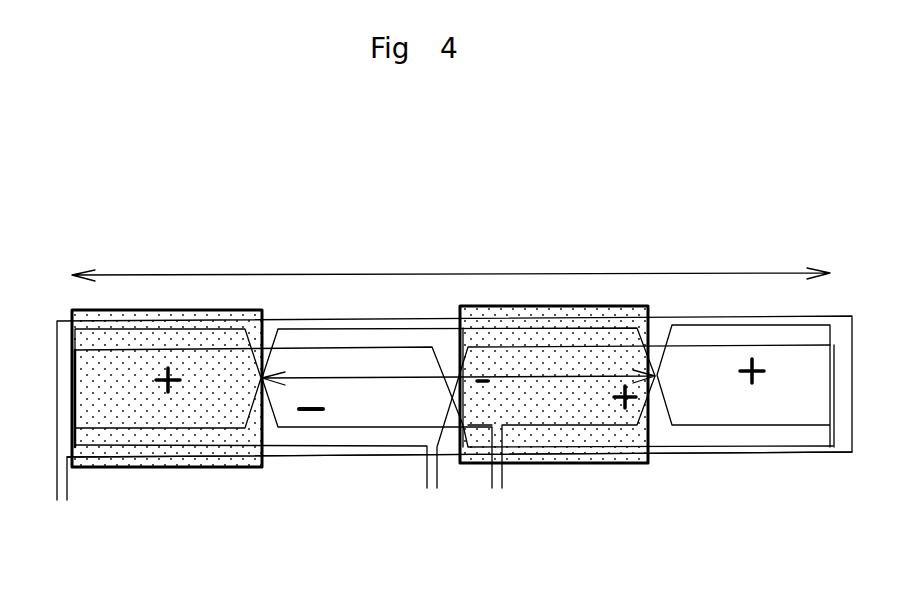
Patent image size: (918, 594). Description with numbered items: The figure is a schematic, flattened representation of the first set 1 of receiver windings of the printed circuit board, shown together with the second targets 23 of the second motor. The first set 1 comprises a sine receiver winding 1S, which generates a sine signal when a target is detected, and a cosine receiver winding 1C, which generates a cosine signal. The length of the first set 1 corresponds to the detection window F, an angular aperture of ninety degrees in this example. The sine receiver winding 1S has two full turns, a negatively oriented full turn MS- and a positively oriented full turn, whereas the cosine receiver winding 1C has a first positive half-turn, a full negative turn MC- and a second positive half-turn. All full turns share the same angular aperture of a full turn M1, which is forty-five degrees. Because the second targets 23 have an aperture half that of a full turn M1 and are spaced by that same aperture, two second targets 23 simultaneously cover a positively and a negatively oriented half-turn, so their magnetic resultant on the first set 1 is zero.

The first set 1 is at (668, 226).
The second targets 23 is at (165, 307).
The detection window F is at (232, 275).
The angular aperture of a full turn M1 is at (377, 377).
The negatively oriented full turn MS- is at (283, 444).
The sine receiver winding 1S is at (315, 447).
The full negative turn MC- is at (408, 417).
The cosine receiver winding 1C is at (543, 425).